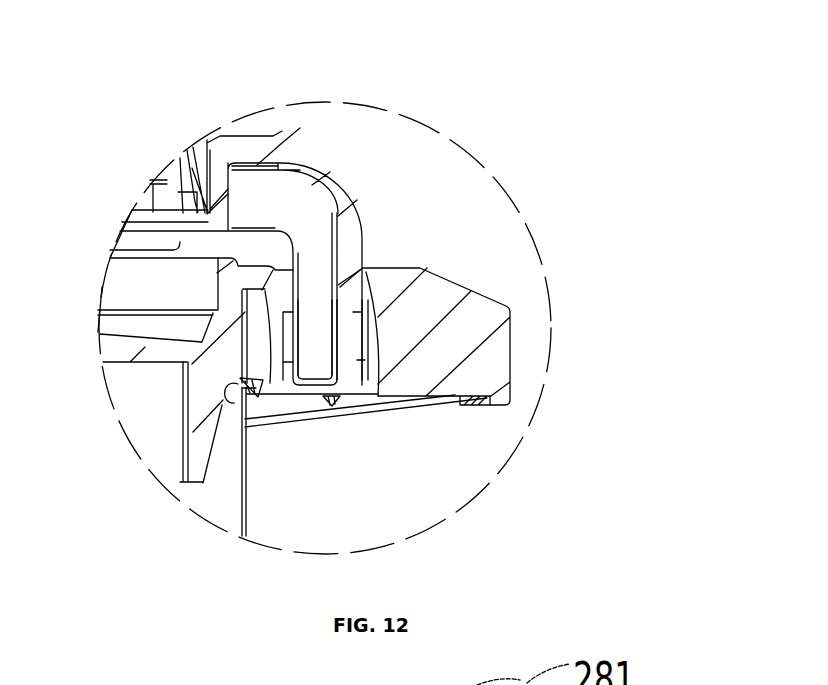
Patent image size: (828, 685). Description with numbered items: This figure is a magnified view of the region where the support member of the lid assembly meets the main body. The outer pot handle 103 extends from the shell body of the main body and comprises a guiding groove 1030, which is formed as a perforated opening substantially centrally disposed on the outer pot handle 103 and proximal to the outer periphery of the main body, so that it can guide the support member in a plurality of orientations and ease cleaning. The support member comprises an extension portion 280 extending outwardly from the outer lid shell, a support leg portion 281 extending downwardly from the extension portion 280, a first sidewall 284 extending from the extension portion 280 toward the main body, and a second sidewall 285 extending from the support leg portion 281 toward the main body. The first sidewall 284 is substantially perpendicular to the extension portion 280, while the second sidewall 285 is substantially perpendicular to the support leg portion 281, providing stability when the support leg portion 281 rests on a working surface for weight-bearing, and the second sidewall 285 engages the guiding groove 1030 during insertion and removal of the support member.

The extension portion 280 is at (283, 153).
The first sidewall 284 is at (285, 205).
The guiding groove 1030 is at (368, 282).
The outer pot handle 103 is at (470, 328).
The support leg portion 281 is at (342, 338).
The second sidewall 285 is at (318, 348).